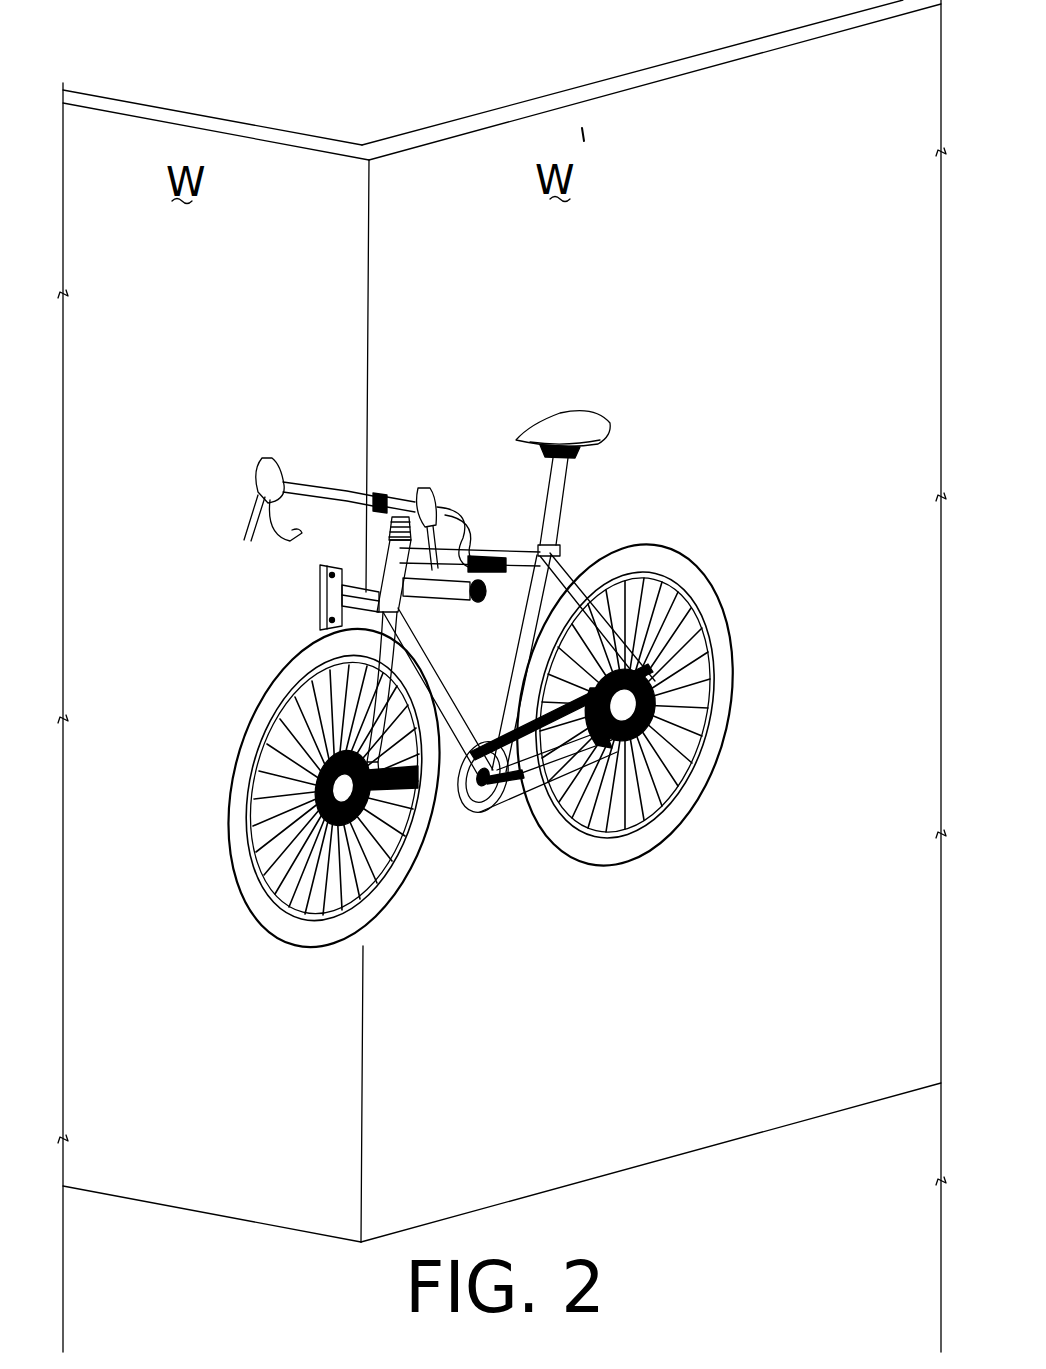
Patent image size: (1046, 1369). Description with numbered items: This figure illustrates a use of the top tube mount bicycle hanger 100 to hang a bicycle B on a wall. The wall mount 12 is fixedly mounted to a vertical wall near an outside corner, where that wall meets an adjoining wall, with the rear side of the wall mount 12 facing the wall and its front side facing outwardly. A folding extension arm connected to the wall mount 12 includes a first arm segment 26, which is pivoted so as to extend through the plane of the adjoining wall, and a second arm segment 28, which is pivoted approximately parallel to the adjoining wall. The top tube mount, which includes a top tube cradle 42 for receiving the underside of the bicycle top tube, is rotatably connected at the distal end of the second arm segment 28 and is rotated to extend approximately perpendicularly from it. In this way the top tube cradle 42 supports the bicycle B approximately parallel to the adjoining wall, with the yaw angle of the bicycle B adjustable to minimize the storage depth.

The bicycle storage rack 100 is at (322, 520).
The wall mount 12 is at (319, 624).
The first arm segment 26 is at (354, 590).
The second arm segment 28 is at (432, 602).
The top tube cradle 42 is at (493, 553).
The bicycle B is at (625, 404).